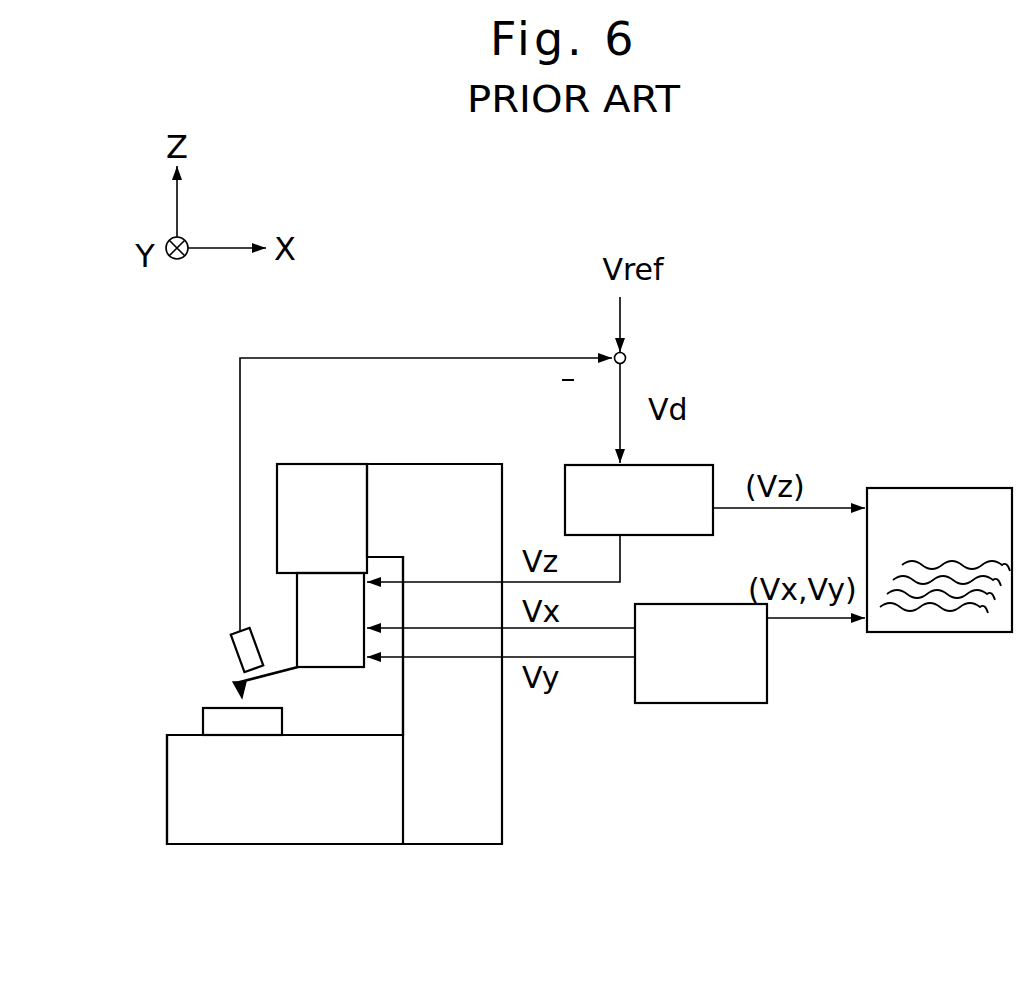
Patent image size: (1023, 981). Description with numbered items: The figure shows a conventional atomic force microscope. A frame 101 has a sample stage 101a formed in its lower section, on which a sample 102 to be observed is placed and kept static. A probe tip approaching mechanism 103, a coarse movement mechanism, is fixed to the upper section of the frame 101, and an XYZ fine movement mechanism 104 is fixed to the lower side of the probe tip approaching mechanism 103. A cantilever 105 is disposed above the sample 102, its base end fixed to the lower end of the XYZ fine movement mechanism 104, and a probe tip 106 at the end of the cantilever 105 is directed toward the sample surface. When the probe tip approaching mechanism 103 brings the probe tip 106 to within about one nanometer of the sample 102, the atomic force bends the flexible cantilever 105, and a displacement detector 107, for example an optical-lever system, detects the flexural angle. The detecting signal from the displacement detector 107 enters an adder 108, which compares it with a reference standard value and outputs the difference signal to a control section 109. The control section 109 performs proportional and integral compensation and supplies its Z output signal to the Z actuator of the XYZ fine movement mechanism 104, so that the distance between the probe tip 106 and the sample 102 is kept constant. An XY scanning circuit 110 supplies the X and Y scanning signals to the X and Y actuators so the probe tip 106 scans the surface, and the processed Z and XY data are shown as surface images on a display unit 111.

The frame 101 is at (505, 760).
The sample stage 101a is at (185, 782).
The sample 102 is at (217, 717).
The probe tip approaching mechanism 103 is at (322, 502).
The XYZ fine movement mechanism 104 is at (355, 658).
The cantilever 105 is at (263, 678).
The probe tip 106 is at (237, 690).
The displacement detector 107 is at (230, 647).
The adder 108 is at (630, 358).
The control section 109 is at (698, 465).
The XY scanning circuit 110 is at (727, 703).
The display unit 111 is at (953, 488).